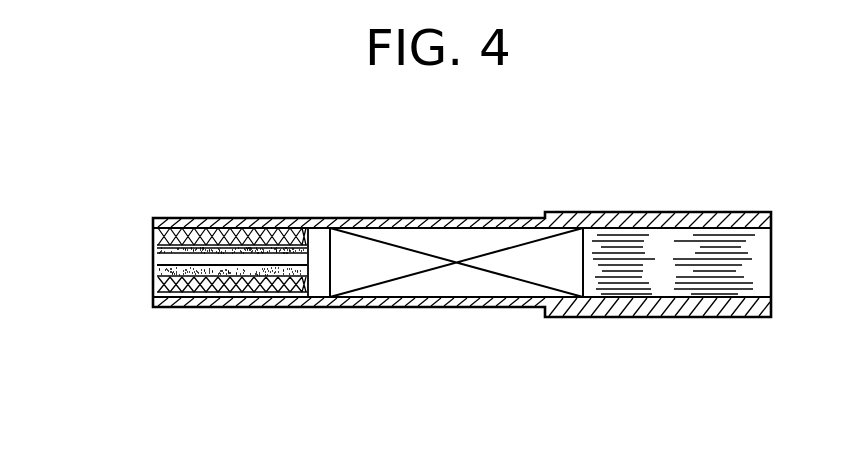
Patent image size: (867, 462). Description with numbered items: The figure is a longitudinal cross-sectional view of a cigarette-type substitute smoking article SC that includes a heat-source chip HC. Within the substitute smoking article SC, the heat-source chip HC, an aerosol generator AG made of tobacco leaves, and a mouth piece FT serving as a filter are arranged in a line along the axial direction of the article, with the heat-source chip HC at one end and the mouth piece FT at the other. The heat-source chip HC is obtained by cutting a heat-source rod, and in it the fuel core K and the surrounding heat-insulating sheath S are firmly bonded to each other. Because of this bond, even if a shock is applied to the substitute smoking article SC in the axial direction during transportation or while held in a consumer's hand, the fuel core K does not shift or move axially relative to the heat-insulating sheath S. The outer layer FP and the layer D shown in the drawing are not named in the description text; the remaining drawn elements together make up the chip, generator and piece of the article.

The frame plate FP is at (440, 222).
The heat-insulating sheath S is at (153, 240).
The fuel core K is at (153, 251).
The heat-source chip HC is at (150, 273).
The lower sheet layer D is at (153, 291).
The substitute smoking article SC is at (324, 330).
The aerosol generator AG is at (470, 280).
The mouth piece FT is at (750, 269).